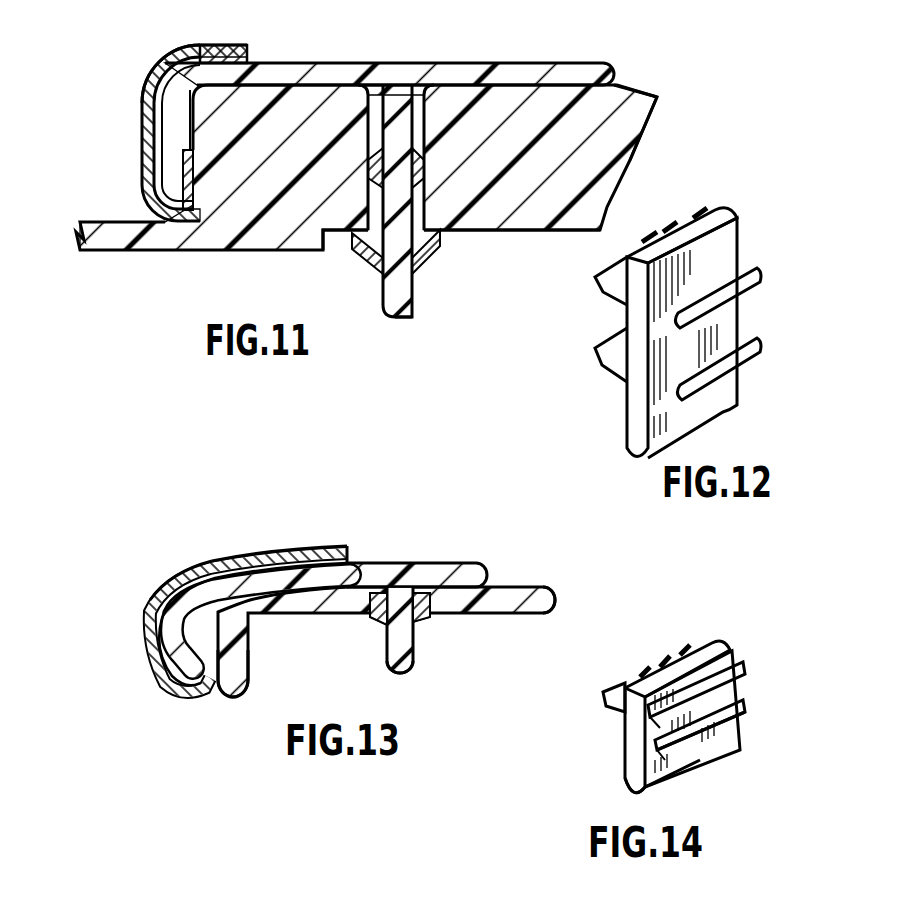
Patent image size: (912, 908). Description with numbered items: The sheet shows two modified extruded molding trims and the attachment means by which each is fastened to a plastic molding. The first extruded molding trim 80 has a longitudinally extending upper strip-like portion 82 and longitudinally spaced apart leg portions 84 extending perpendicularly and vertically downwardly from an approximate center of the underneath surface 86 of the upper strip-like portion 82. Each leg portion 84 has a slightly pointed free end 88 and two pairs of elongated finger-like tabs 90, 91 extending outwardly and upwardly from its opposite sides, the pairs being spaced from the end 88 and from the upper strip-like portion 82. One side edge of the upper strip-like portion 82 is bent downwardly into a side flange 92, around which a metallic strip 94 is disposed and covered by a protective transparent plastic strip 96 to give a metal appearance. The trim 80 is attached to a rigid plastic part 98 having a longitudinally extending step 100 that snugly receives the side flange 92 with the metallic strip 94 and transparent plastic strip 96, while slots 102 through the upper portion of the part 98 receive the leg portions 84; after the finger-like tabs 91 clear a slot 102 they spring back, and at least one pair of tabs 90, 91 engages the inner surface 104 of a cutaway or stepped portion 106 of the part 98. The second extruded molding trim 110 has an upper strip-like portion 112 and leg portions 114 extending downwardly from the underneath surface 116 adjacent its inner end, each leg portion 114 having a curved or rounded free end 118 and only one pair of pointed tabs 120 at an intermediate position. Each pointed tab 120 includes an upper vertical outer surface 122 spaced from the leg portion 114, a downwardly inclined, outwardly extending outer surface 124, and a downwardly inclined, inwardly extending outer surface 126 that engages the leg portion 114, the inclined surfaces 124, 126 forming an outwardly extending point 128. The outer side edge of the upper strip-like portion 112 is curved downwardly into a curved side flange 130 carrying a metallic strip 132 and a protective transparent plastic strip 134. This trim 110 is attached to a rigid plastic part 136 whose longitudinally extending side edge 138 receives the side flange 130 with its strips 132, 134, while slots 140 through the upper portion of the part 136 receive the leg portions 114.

In FIG. 11, the extruded molding trim 80 is at (403, 58).
In FIG. 11, the upper strip-like portion 82 is at (530, 66).
In FIG. 11, the leg portions 84 is at (414, 298).
In FIG. 12, the leg portions 84 is at (727, 242).
In FIG. 11, the underneath surface 86 is at (616, 86).
In FIG. 11, the free end 88 is at (408, 318).
In FIG. 11, the finger-like tabs 90 is at (384, 170).
In FIG. 12, the finger-like tabs 90 is at (753, 287).
In FIG. 11, the finger-like tabs 91 is at (362, 258).
In FIG. 12, the finger-like tabs 91 is at (745, 362).
In FIG. 11, the side flange 92 is at (168, 143).
In FIG. 11, the metallic strip 94 is at (190, 72).
In FIG. 11, the protective transparent plastic strip 96 is at (225, 45).
In FIG. 11, the part 98 is at (660, 99).
In FIG. 11, the step 100 is at (140, 212).
In FIG. 11, the slots 102 is at (422, 96).
In FIG. 11, the inner surface 104 is at (522, 232).
In FIG. 11, the stepped portion 106 is at (333, 245).
In FIG. 13, the extruded molding trim 110 is at (375, 592).
In FIG. 13, the upper strip-like portion 112 is at (462, 565).
In FIG. 13, the leg portions 114 is at (415, 659).
In FIG. 14, the leg portions 114 is at (720, 664).
In FIG. 13, the underneath surface 116 is at (505, 590).
In FIG. 13, the free end 118 is at (405, 676).
In FIG. 14, the free end 118 is at (640, 783).
In FIG. 13, the pointed tabs 120 is at (376, 628).
In FIG. 14, the pointed tabs 120 is at (610, 697).
In FIG. 14, the upper vertical outer surface 122 is at (606, 703).
In FIG. 14, the inclined outer surface 124 is at (717, 720).
In FIG. 14, the inclined outer surface 126 is at (660, 783).
In FIG. 13, the point 128 is at (352, 612).
In FIG. 14, the point 128 is at (620, 743).
In FIG. 13, the side flange 130 is at (157, 608).
In FIG. 13, the metallic strip 132 is at (258, 550).
In FIG. 13, the protective transparent plastic strip 134 is at (203, 560).
In FIG. 13, the part 136 is at (560, 582).
In FIG. 13, the side edge 138 is at (236, 702).
In FIG. 13, the slots 140 is at (423, 562).